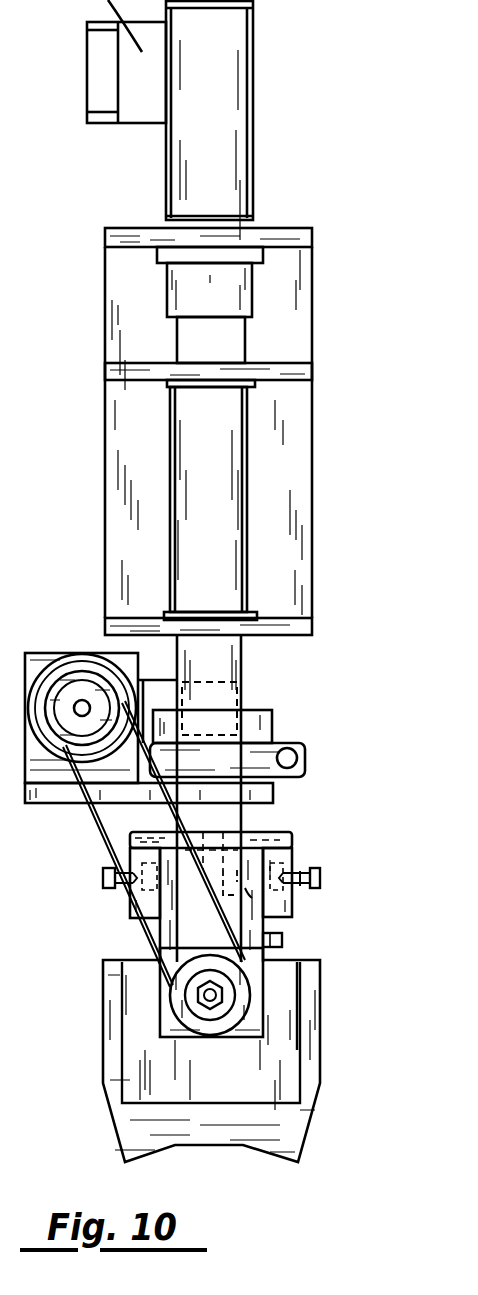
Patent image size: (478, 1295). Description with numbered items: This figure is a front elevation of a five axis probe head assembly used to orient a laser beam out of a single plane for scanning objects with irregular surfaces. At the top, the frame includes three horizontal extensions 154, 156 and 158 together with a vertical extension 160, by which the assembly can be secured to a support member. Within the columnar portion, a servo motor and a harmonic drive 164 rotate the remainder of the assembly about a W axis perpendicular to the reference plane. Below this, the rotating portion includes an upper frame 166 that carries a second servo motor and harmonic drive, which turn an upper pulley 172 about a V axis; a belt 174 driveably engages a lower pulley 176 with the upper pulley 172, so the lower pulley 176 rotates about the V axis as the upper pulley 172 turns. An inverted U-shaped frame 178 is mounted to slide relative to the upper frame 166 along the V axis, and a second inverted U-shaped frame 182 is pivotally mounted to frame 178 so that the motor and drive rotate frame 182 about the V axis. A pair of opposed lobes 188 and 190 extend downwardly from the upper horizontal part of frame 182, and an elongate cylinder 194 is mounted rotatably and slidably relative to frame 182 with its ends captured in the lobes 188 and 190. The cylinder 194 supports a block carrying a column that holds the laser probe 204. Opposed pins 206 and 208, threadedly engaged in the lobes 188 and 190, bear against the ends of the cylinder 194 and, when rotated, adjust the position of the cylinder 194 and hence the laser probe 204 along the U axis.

The horizontal extension 154 is at (290, 228).
The horizontal extension 156 is at (290, 363).
The horizontal extension 158 is at (290, 620).
The vertical extension 160 is at (132, 428).
The harmonic drive 164 is at (188, 290).
The upper frame 166 is at (190, 720).
The upper pulley 172 is at (68, 665).
The belt 174 is at (95, 833).
The lower pulley 176 is at (183, 1012).
The inverted U-shaped frame 178 is at (263, 952).
The second inverted U-shaped frame 182 is at (277, 833).
The lobe 188 is at (152, 907).
The lobe 190 is at (287, 850).
The elongate cylinder 194 is at (250, 893).
The laser probe 204 is at (297, 1125).
The pin 206 is at (105, 875).
The pin 208 is at (320, 878).